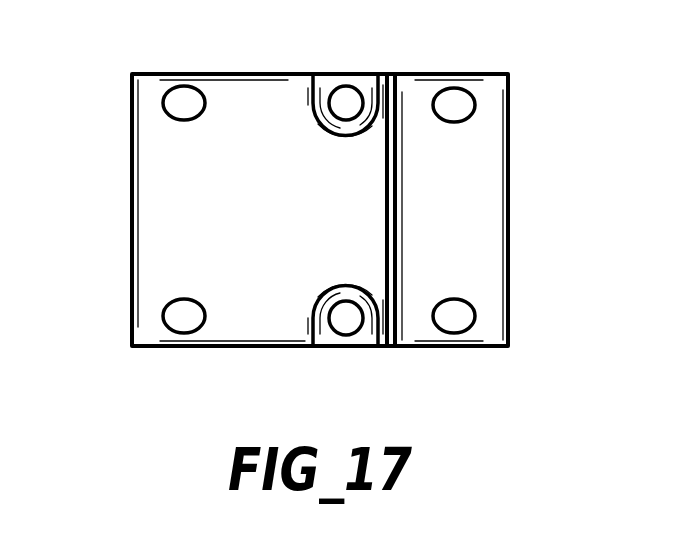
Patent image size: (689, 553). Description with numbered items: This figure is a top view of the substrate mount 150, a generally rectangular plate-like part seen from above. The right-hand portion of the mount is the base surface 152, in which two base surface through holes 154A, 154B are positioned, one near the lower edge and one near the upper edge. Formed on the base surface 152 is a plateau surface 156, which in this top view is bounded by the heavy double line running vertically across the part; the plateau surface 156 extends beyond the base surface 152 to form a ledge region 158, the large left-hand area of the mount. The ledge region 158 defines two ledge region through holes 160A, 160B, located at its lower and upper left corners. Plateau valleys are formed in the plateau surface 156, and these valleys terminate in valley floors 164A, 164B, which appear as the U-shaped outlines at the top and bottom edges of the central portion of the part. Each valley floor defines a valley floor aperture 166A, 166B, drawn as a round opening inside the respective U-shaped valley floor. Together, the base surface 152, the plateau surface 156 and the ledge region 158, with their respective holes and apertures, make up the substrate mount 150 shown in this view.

The substrate mount 150 is at (112, 183).
The base surface 152 is at (442, 237).
The base surface through hole 154A is at (454, 325).
The base surface through hole 154B is at (450, 104).
The plateau surface 156 is at (330, 190).
The ledge region 158 is at (183, 238).
The ledge region through hole 160A is at (185, 320).
The ledge region through hole 160B is at (184, 100).
The valley floor 164A is at (327, 340).
The valley floor 164B is at (325, 85).
The valley floor aperture 166A is at (348, 320).
The valley floor aperture 166B is at (348, 103).